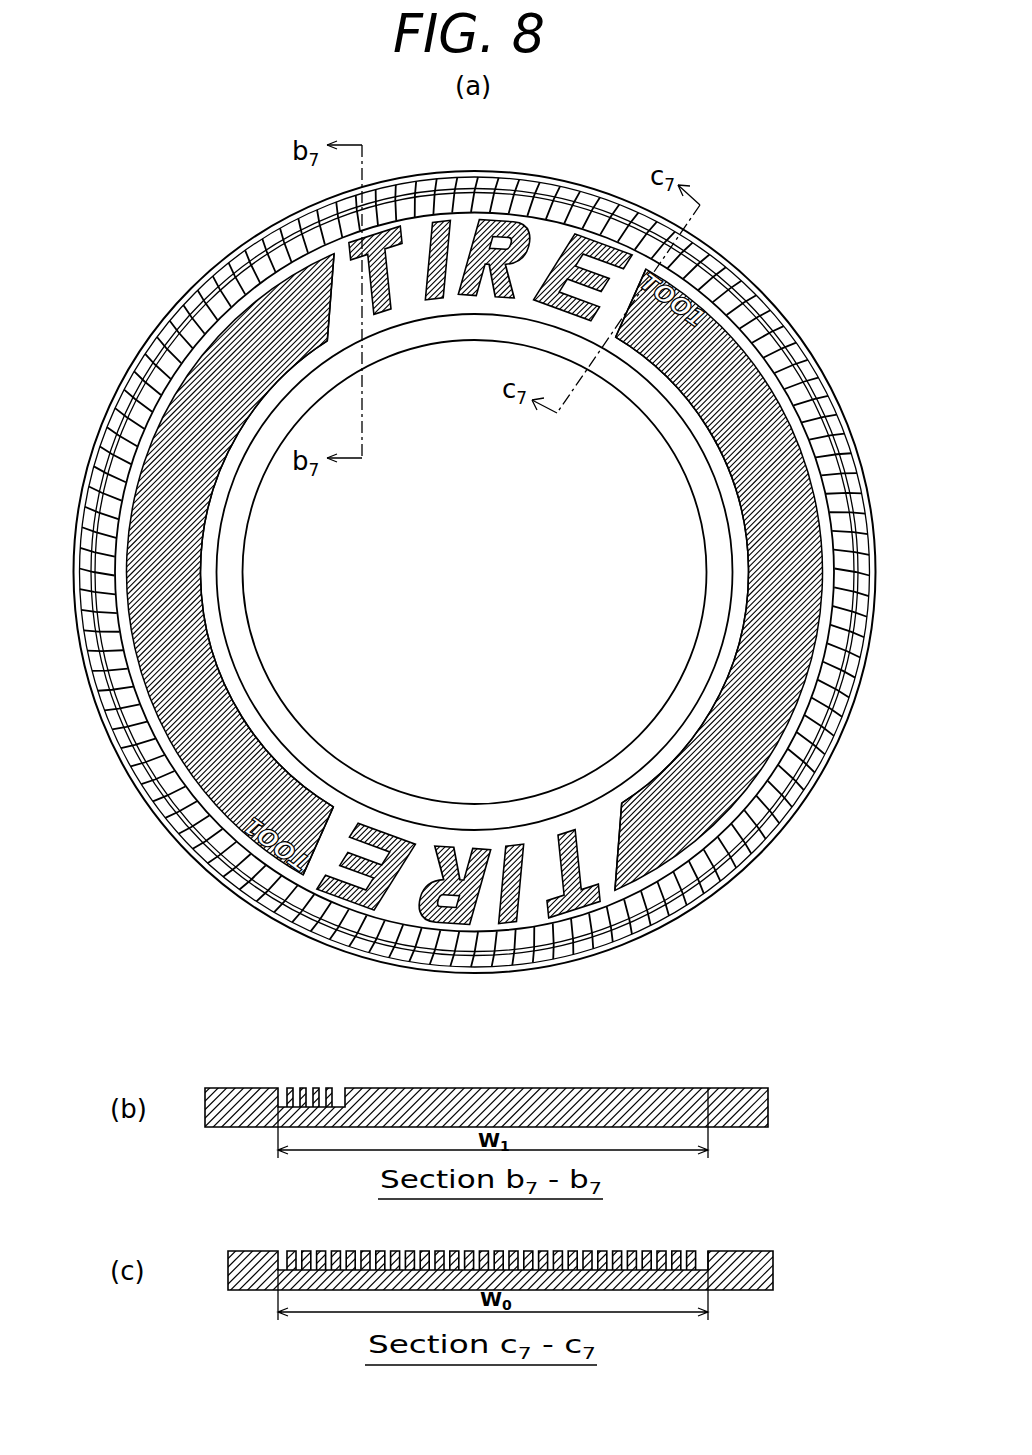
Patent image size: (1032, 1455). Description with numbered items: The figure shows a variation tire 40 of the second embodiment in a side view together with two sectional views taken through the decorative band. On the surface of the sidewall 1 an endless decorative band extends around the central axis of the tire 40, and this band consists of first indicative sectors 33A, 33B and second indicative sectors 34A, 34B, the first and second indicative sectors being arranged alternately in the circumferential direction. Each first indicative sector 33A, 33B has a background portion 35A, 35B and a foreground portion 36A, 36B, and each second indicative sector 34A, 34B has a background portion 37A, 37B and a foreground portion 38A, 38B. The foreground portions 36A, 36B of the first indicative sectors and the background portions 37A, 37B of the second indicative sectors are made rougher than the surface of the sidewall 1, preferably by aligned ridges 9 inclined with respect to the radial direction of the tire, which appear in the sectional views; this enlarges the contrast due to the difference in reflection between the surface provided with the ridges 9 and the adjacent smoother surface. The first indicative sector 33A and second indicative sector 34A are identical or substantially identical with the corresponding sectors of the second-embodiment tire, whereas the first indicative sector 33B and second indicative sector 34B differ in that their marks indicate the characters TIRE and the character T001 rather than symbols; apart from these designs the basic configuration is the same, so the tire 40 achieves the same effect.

The sidewall 1 is at (240, 305).
The ridge 9 is at (320, 1088).
The first indicative sector 33A is at (498, 210).
The first indicative sector 33B is at (487, 936).
The second indicative sector 34A is at (726, 485).
The second indicative sector 34B is at (205, 826).
The background portion of the first indicative sector 35A is at (550, 237).
The background portion of the first indicative sector 35B is at (400, 903).
The foreground portion of the first indicative sector 36A is at (578, 247).
The foreground portion of the first indicative sector 36B is at (573, 905).
The background portion of the second indicative sector 37A is at (747, 378).
The background portion of the second indicative sector 37B is at (197, 752).
The foreground portion of the second indicative sector 38A is at (680, 262).
The foreground portion of the second indicative sector 38B is at (268, 850).
The tire 40 is at (781, 253).